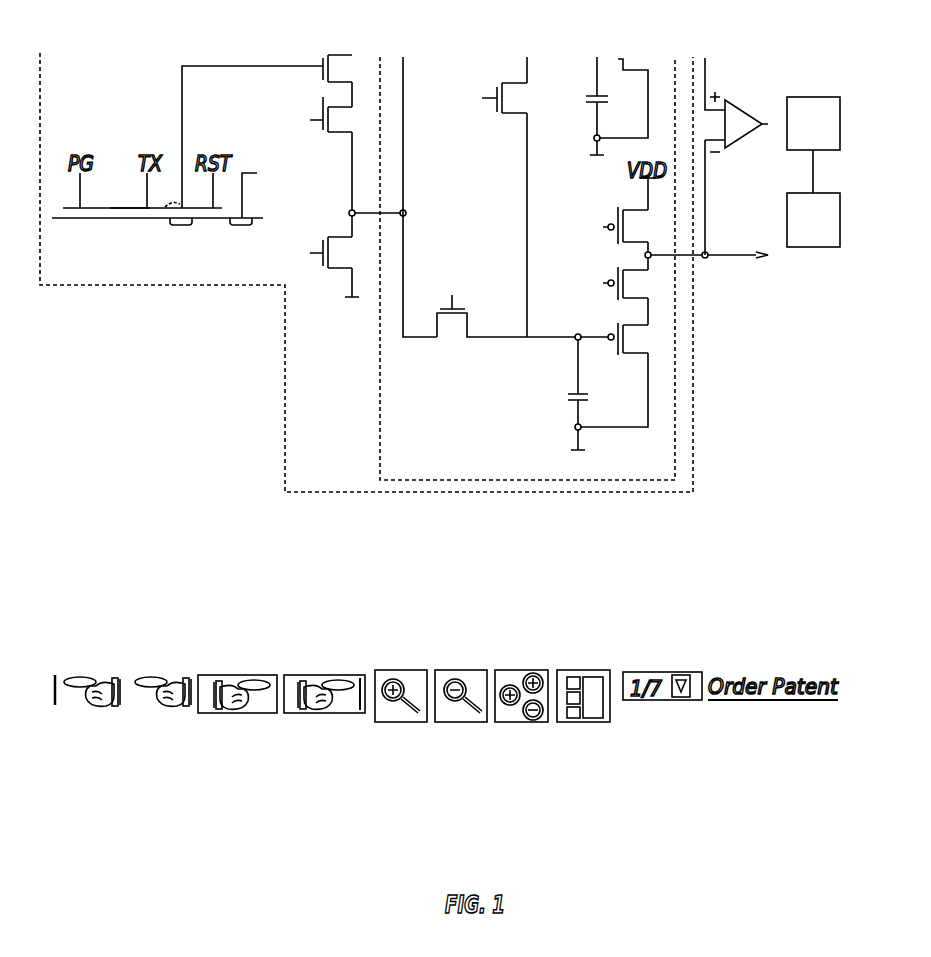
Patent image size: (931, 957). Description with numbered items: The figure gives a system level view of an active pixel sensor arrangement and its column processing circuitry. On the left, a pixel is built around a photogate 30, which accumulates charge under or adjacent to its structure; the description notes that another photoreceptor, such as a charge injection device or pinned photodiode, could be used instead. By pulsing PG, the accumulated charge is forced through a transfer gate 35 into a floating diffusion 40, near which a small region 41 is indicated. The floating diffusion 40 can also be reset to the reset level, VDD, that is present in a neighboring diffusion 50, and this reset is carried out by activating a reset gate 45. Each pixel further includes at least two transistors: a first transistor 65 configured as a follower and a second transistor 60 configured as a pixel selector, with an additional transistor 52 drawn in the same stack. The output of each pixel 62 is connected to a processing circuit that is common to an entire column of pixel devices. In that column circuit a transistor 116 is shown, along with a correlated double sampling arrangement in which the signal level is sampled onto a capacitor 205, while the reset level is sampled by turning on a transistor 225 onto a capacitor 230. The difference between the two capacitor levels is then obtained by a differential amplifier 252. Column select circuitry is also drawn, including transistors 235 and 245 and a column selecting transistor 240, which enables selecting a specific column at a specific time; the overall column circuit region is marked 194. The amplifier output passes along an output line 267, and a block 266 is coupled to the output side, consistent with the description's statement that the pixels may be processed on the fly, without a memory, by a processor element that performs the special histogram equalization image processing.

The photogate 30 is at (77, 207).
The transfer gate 35 is at (127, 207).
The floating diffusion 40 is at (182, 226).
The charge accumulation region 41 is at (165, 211).
The reset gate 45 is at (222, 208).
The diffusion 50 is at (240, 226).
The source follower transistor 52 is at (324, 57).
The second transistor 60 is at (323, 100).
The output of each pixel 62 is at (363, 215).
The first transistor 65 is at (323, 240).
The VM transistor 116 is at (497, 112).
The column readout circuit 194 is at (652, 338).
The capacitor 205 is at (609, 82).
The transistor 225 is at (435, 308).
The capacitor 230 is at (590, 398).
The VLP transistor 235 is at (618, 208).
The column selecting transistor 240 is at (618, 322).
The column transistor 245 is at (618, 265).
The differential amplifier 252 is at (727, 148).
The microcontroller 266 is at (797, 98).
The output signal line 267 is at (826, 247).